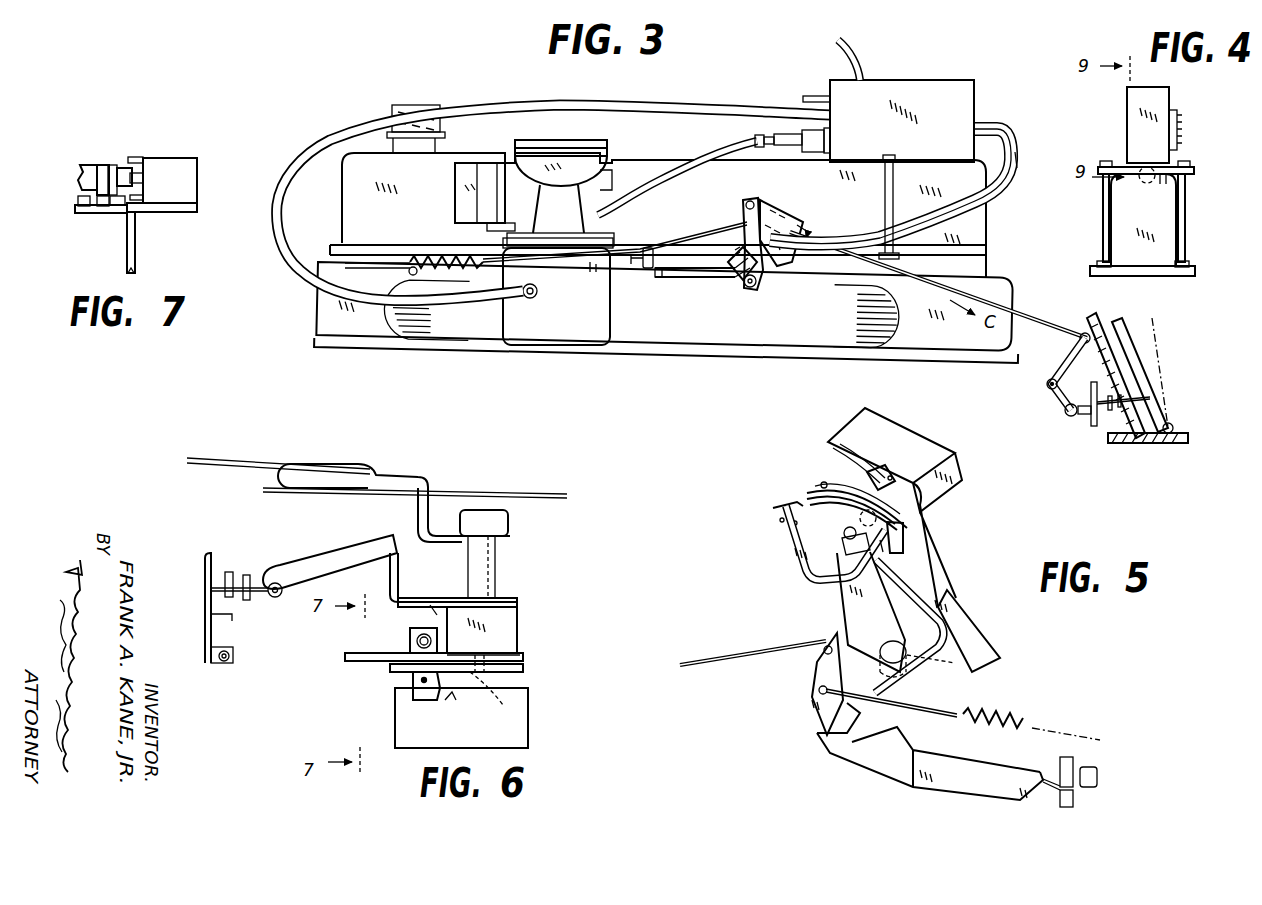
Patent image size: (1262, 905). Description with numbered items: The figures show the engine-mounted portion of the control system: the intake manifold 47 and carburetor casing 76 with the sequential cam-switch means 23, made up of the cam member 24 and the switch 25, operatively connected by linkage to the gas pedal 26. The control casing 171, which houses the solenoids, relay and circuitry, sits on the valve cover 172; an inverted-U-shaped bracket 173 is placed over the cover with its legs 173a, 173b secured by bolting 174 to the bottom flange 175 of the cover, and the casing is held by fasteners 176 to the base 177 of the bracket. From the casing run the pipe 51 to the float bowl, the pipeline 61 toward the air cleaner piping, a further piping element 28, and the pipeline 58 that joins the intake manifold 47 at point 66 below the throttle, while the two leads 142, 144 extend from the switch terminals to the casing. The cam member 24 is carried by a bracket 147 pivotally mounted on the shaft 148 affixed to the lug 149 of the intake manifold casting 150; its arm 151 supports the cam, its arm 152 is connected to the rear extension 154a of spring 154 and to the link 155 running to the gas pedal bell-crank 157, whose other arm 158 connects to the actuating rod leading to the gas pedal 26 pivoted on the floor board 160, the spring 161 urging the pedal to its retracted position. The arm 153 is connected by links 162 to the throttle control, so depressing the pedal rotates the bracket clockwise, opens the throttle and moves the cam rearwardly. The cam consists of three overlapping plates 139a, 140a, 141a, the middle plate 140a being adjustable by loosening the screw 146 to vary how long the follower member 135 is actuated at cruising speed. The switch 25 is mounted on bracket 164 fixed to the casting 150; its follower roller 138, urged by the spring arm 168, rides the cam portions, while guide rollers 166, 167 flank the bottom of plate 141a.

In FIG. 6, the sequential cam-switch means 23 is at (531, 651).
In FIG. 6, the cam member 24 is at (365, 648).
In FIG. 5, the cam member 24 is at (918, 538).
In FIG. 7, the switch 25 is at (194, 158).
In FIG. 6, the switch 25 is at (393, 730).
In FIG. 5, the switch 25 is at (848, 420).
In FIG. 3, the gas pedal 26 is at (1140, 355).
In FIG. 3, the conduit 28 is at (720, 152).
In FIG. 3, the intake manifold 47 is at (481, 322).
In FIG. 3, the pipe 51 is at (813, 96).
In FIG. 3, the pipeline 58 is at (698, 105).
In FIG. 3, the pipeline 61 is at (852, 56).
In FIG. 3, the point 66 is at (536, 291).
In FIG. 3, the carburetor casing 76 is at (490, 194).
In FIG. 6, the follower member 135 is at (412, 696).
In FIG. 7, the follower roller 138 is at (125, 168).
In FIG. 6, the follower roller 138 is at (410, 675).
In FIG. 5, the follower roller 138 is at (900, 478).
In FIG. 7, the plate 139a is at (113, 165).
In FIG. 6, the plate 139a is at (525, 670).
In FIG. 5, the plate 139a is at (830, 478).
In FIG. 7, the plate 140a is at (105, 163).
In FIG. 6, the plate 140a is at (407, 658).
In FIG. 5, the plate 140a is at (817, 483).
In FIG. 7, the plate 141a is at (92, 164).
In FIG. 6, the plate 141a is at (345, 657).
In FIG. 5, the plate 141a is at (810, 490).
In FIG. 3, the lead 142 is at (1003, 128).
In FIG. 3, the lead 144 is at (1017, 150).
In FIG. 6, the screw 146 is at (470, 672).
In FIG. 3, the bracket 147 is at (730, 252).
In FIG. 5, the bracket 147 is at (810, 583).
In FIG. 6, the shaft 148 is at (500, 563).
In FIG. 5, the shaft 148 is at (845, 618).
In FIG. 3, the lug 149 is at (733, 285).
In FIG. 5, the lug 149 is at (990, 652).
In FIG. 3, the intake manifold casting 150 is at (787, 327).
In FIG. 6, the arm 151 is at (508, 604).
In FIG. 5, the arm 151 is at (785, 508).
In FIG. 3, the arm 152 is at (744, 208).
In FIG. 6, the arm 152 is at (414, 477).
In FIG. 5, the arm 152 is at (815, 668).
In FIG. 3, the arm 153 is at (697, 280).
In FIG. 6, the arm 153 is at (350, 540).
In FIG. 5, the arm 153 is at (1000, 790).
In FIG. 3, the spring 154 is at (445, 262).
In FIG. 5, the spring 154 is at (1017, 718).
In FIG. 3, the rear extension 154a is at (666, 245).
In FIG. 6, the rear extension 154a is at (250, 443).
In FIG. 5, the rear extension 154a is at (955, 717).
In FIG. 3, the link 155 is at (1066, 332).
In FIG. 6, the link 155 is at (505, 493).
In FIG. 5, the link 155 is at (755, 636).
In FIG. 3, the gas pedal bell-crank 157 is at (1048, 388).
In FIG. 3, the arm 158 is at (1062, 408).
In FIG. 3, the floor board 160 is at (1175, 438).
In FIG. 3, the spring 161 is at (1100, 420).
In FIG. 3, the links 162 is at (637, 272).
In FIG. 6, the links 162 is at (230, 616).
In FIG. 5, the links 162 is at (1097, 777).
In FIG. 3, the bracket 164 is at (777, 258).
In FIG. 7, the bracket 164 is at (137, 252).
In FIG. 5, the bracket 164 is at (930, 551).
In FIG. 7, the guide roller 166 is at (75, 204).
In FIG. 6, the guide roller 166 is at (430, 625).
In FIG. 5, the guide roller 166 is at (842, 533).
In FIG. 7, the guide roller 167 is at (118, 210).
In FIG. 7, the spring arm 168 is at (142, 158).
In FIG. 5, the spring arm 168 is at (880, 465).
In FIG. 3, the control casing 171 is at (935, 80).
In FIG. 3, the valve cover 172 is at (372, 153).
In FIG. 4, the valve cover 172 is at (1165, 240).
In FIG. 4, the inverted-U-shaped bracket 173 is at (1200, 169).
In FIG. 4, the leg 173a is at (1104, 216).
In FIG. 4, the leg 173b is at (1188, 192).
In FIG. 4, the bolting 174 is at (1190, 268).
In FIG. 4, the bottom flange 175 is at (1095, 268).
In FIG. 4, the fasteners 176 is at (1138, 176).
In FIG. 4, the base 177 is at (1170, 180).